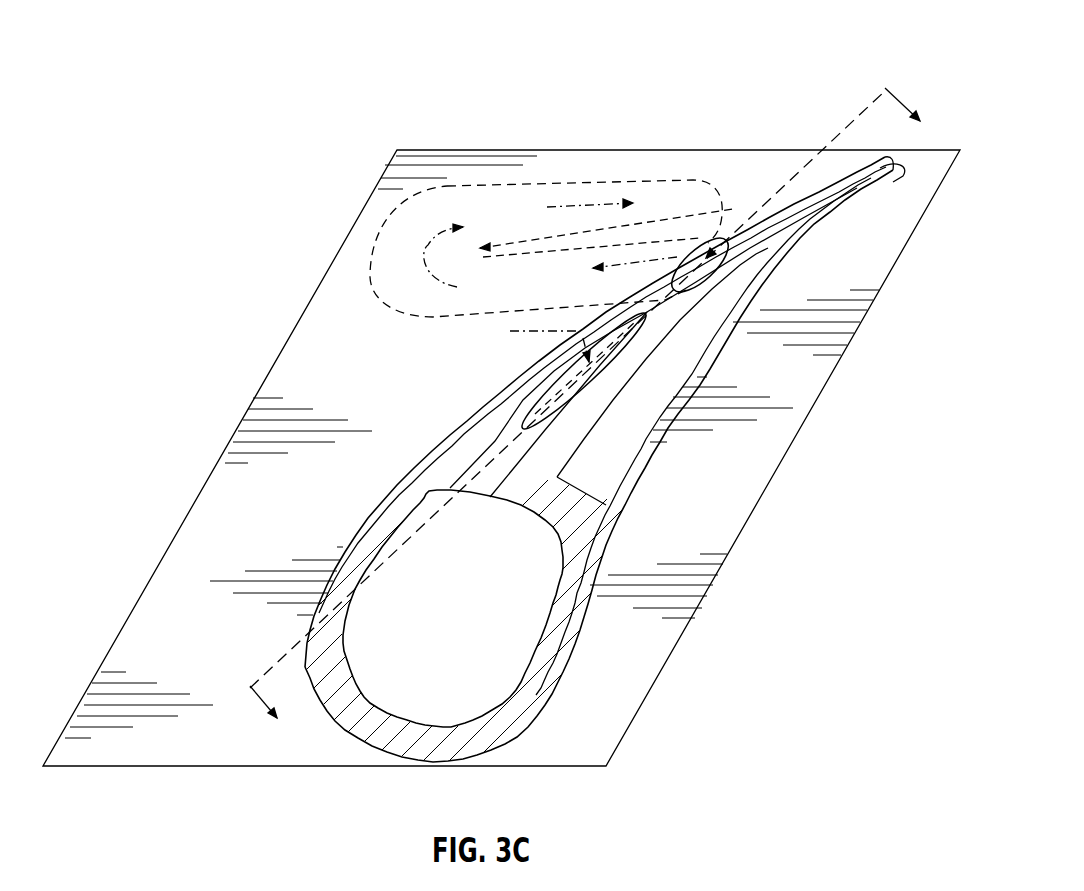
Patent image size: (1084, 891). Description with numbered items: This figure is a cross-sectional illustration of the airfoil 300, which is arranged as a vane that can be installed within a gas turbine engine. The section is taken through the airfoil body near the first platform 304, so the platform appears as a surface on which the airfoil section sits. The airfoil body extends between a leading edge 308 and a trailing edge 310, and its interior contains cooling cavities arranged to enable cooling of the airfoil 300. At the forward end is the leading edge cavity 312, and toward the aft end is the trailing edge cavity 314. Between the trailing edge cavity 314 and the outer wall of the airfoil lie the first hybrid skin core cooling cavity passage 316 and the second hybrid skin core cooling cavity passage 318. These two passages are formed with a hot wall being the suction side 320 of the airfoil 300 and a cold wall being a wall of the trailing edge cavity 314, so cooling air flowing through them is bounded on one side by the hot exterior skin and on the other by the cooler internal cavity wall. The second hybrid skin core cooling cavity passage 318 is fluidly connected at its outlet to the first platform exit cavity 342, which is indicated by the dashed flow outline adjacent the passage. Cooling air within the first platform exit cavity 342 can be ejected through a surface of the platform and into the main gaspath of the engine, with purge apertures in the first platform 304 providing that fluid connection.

The airfoil 300 is at (300, 75).
The first platform 304 is at (280, 423).
The leading edge 308 is at (370, 747).
The trailing edge 310 is at (903, 172).
The leading edge cavity 312 is at (473, 620).
The trailing edge cavity 314 is at (593, 446).
The first hybrid skin core cooling cavity passage 316 is at (547, 396).
The second hybrid skin core cooling cavity passage 318 is at (710, 240).
The suction side 320 is at (413, 470).
The first platform exit cavity 342 is at (530, 211).